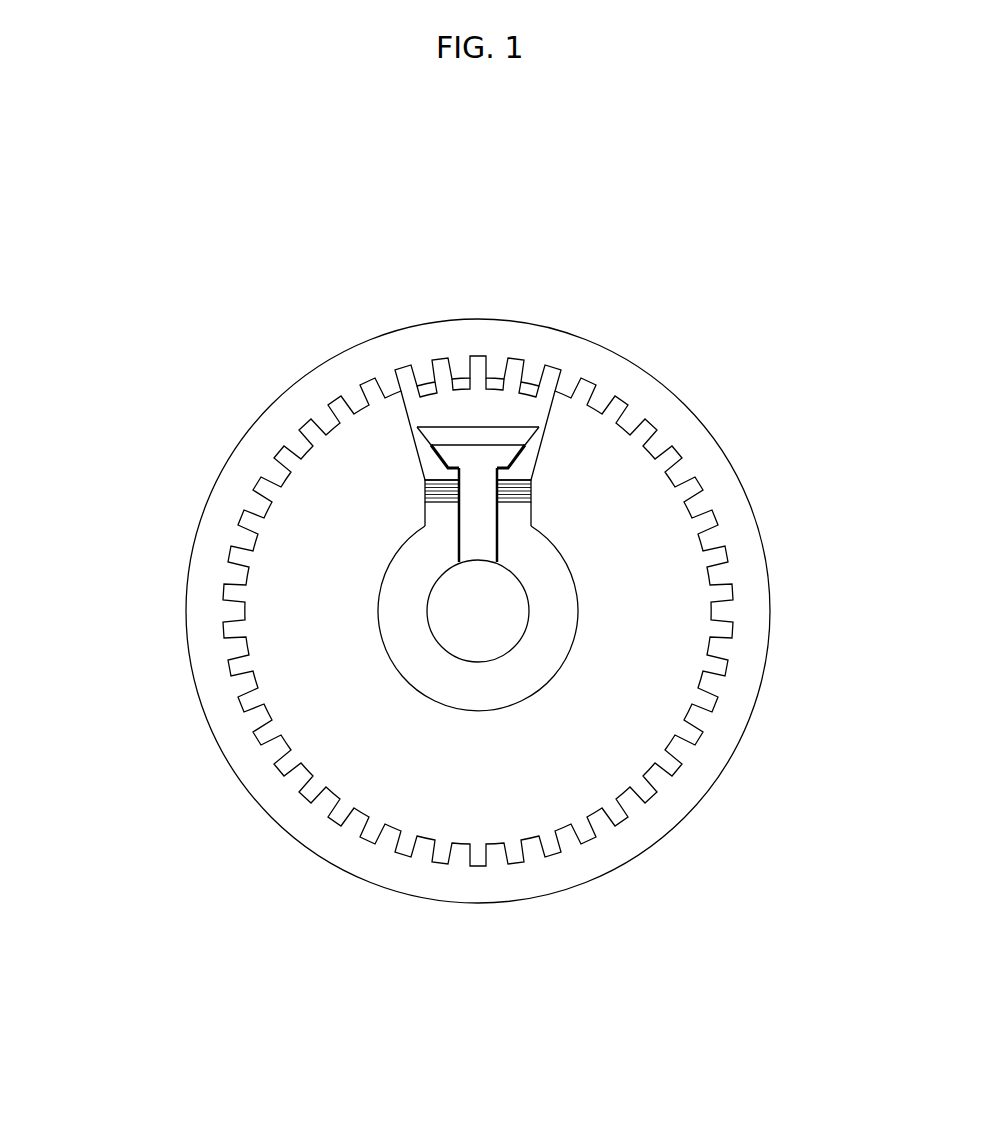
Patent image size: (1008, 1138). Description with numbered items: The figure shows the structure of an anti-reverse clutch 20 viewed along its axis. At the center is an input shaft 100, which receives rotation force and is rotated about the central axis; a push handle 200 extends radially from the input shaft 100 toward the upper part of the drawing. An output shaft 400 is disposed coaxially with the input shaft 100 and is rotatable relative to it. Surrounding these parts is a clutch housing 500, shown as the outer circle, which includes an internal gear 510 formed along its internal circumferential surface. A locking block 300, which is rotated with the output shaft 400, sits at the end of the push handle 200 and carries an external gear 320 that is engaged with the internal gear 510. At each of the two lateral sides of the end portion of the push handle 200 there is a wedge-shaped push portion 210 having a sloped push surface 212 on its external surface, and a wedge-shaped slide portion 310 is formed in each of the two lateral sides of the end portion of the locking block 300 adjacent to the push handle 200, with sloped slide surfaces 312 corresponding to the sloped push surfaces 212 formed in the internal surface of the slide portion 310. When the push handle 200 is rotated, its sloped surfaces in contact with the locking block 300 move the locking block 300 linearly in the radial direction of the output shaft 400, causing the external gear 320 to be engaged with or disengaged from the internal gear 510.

The anti-reverse clutch 20 is at (284, 358).
The input shaft 100 is at (487, 620).
The push handle 200 is at (485, 542).
The wedge-shaped push portion 210 is at (503, 453).
The sloped push surface 212 is at (437, 457).
The locking block 300 is at (508, 405).
The wedge-shaped slide portion 310 is at (525, 468).
The sloped slide surface 312 is at (440, 423).
The external gear 320 is at (476, 372).
The output shaft 400 is at (412, 623).
The clutch housing 500 is at (210, 562).
The internal gear 510 is at (372, 378).